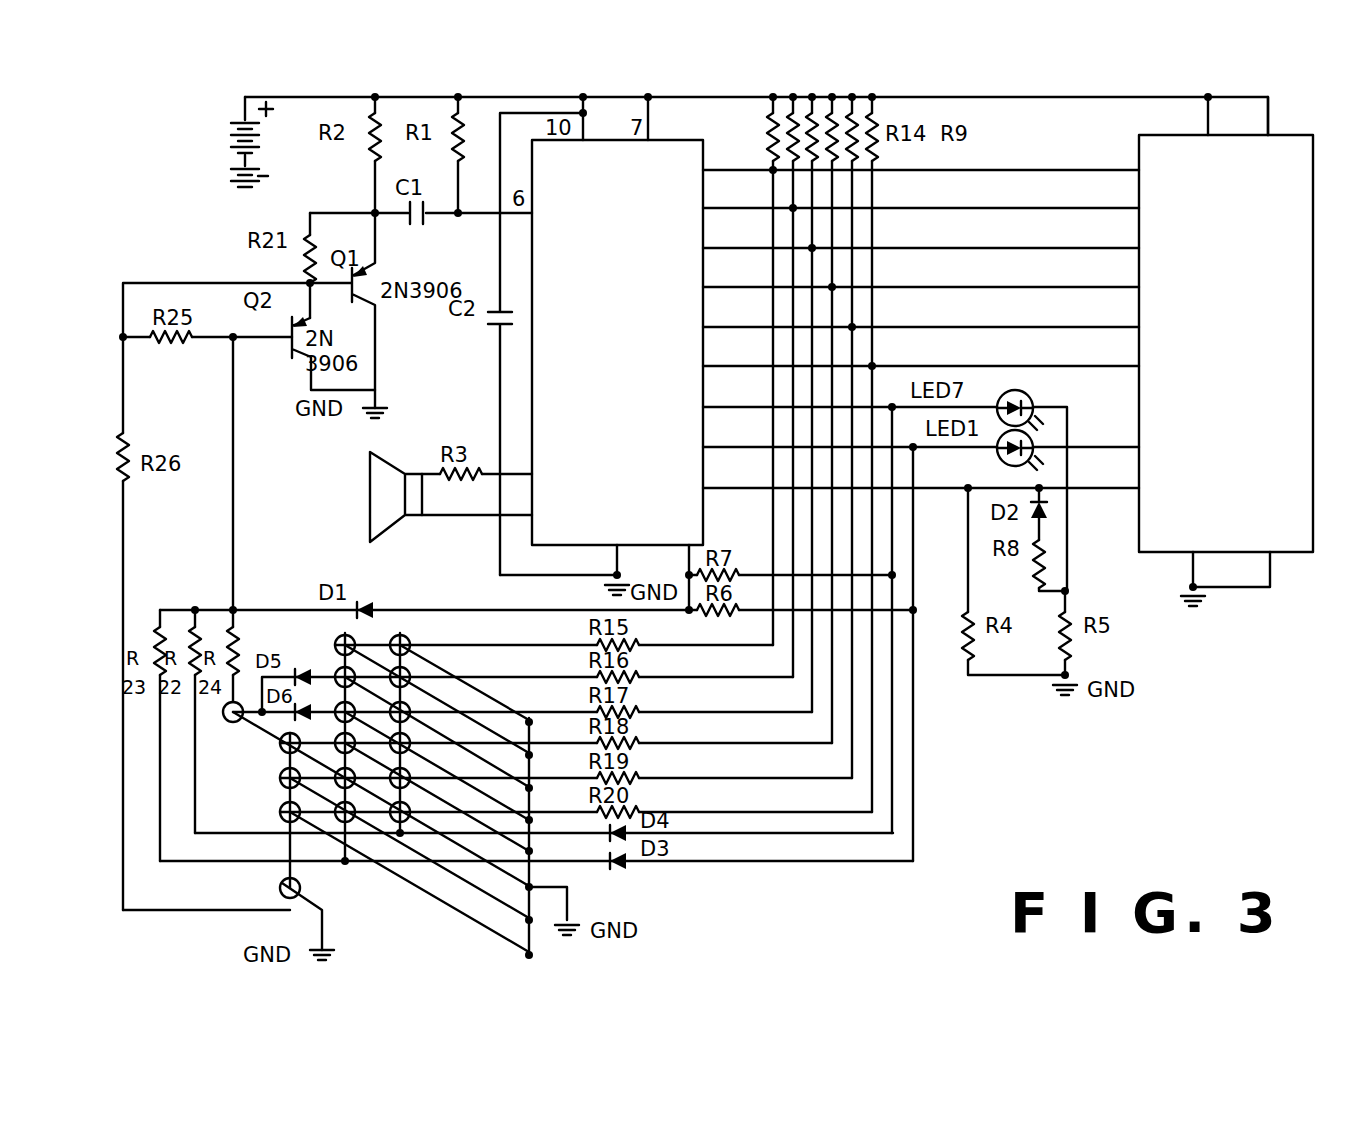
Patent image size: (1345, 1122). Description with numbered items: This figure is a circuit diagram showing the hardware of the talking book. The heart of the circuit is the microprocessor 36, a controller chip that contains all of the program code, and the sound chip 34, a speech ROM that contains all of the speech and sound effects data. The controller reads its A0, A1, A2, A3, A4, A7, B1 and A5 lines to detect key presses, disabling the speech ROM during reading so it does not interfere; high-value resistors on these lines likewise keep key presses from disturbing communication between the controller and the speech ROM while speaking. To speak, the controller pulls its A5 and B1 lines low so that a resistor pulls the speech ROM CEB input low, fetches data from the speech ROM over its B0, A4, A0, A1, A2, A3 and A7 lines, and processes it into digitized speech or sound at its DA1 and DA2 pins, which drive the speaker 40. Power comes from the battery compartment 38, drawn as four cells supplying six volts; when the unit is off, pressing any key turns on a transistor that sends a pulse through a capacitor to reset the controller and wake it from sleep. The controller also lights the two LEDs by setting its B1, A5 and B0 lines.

The sound chip 34 is at (1155, 135).
The microprocessor 36 is at (703, 140).
The battery compartment 38 is at (192, 159).
The speaker 40 is at (389, 452).